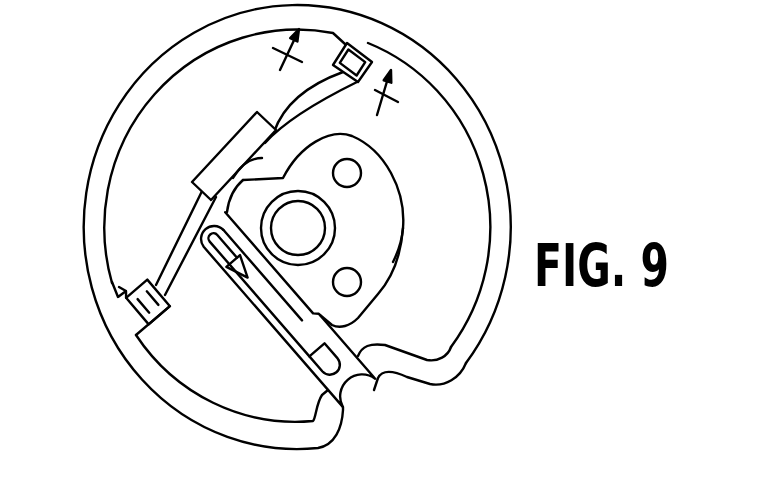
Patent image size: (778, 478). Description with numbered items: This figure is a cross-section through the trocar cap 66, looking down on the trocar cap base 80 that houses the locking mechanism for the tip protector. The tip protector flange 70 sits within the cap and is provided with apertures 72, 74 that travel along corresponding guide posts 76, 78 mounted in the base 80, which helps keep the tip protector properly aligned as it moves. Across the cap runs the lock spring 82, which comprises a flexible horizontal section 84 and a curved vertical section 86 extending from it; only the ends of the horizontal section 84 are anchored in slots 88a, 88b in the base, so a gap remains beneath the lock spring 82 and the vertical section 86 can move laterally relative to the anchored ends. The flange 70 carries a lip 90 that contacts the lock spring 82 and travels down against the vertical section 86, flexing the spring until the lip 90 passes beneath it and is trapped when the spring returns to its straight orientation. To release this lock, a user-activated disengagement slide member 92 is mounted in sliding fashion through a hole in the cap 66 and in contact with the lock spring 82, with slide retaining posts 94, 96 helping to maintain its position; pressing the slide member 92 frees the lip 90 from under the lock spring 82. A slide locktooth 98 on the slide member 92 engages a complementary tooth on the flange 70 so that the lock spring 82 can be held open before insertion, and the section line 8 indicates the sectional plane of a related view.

The section line 8- 8 is at (335, 86).
The trocar cap 66 is at (477, 336).
The tip protector flange 70 is at (337, 230).
The aperture 72 is at (362, 172).
The aperture 74 is at (360, 283).
The guide post 76 is at (347, 176).
The guide post 78 is at (402, 236).
The trocar cap base 80 is at (478, 178).
The lock spring 82 is at (250, 183).
The horizontal section 84 is at (296, 101).
The vertical section 86 is at (228, 143).
The slot 88a is at (112, 284).
The slot 88b is at (356, 40).
The lip 90 is at (263, 158).
The disengagement slide member 92 is at (291, 327).
The slide retaining post 94 is at (237, 287).
The slide retaining post 96 is at (312, 366).
The slide locktooth 98 is at (306, 326).